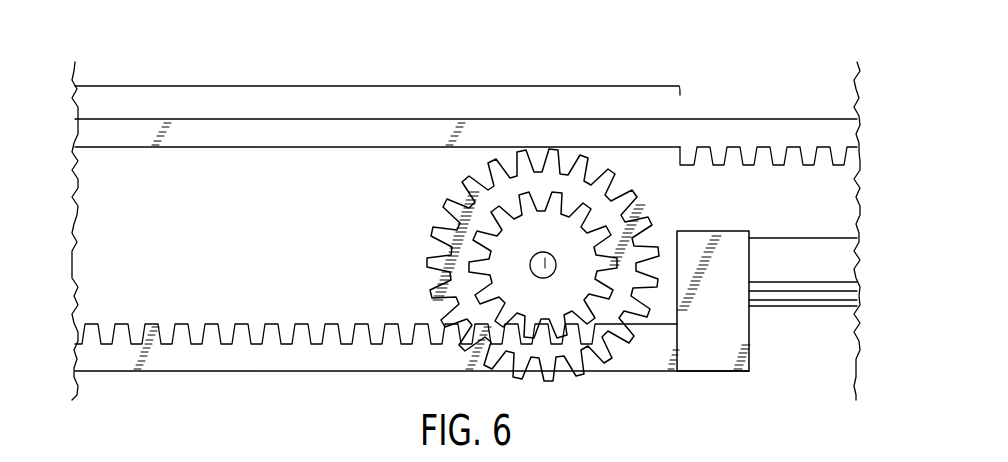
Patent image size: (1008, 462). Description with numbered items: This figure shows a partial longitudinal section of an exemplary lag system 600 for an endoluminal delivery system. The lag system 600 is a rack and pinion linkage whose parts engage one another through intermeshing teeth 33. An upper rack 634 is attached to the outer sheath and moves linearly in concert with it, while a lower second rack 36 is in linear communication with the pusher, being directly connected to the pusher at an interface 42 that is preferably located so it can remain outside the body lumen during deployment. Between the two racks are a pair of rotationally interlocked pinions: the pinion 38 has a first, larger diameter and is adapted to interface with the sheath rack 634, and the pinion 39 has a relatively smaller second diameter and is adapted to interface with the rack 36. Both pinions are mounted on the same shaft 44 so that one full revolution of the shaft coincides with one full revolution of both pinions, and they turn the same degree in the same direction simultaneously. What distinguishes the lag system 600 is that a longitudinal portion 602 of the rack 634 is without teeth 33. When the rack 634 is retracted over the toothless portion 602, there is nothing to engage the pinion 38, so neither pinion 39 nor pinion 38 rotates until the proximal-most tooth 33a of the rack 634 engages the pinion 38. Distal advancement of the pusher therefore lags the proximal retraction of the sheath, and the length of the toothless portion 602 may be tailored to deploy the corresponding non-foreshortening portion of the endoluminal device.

The lag system 600 is at (740, 70).
The toothless portion 602 is at (300, 86).
The rack 634 is at (202, 148).
The proximal-most tooth 33a is at (690, 163).
The teeth 33 is at (213, 330).
The second rack 36 is at (233, 366).
The pinion 38 is at (475, 202).
The pinion 39 is at (568, 309).
The shaft 44 is at (548, 257).
The interface 42 is at (712, 366).